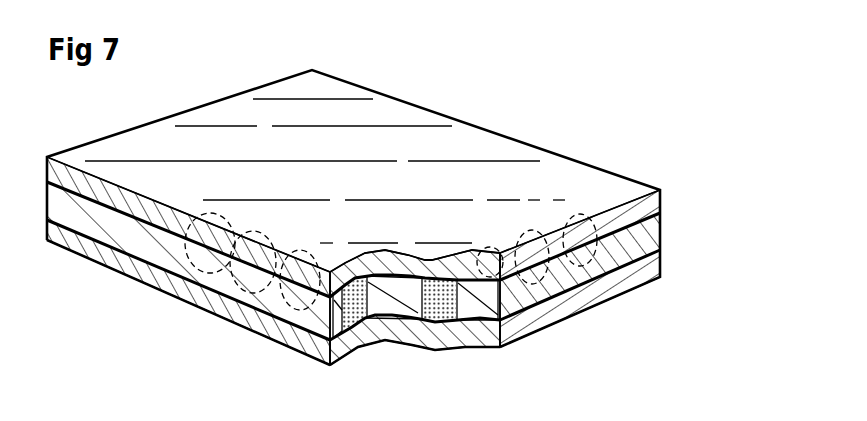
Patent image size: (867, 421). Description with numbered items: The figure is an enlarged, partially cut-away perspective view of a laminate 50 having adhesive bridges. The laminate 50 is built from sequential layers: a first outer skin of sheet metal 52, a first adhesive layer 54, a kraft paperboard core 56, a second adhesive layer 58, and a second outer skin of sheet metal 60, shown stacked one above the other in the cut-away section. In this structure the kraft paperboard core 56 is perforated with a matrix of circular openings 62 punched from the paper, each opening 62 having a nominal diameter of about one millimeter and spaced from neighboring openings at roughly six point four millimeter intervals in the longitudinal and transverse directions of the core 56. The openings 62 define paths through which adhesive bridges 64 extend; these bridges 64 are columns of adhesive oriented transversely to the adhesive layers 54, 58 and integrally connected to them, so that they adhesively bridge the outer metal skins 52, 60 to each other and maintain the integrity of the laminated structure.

The laminate 50 is at (436, 98).
The first outer skin of sheet metal 52 is at (650, 200).
The first adhesive layer 54 is at (653, 215).
The kraft paperboard core 56 is at (650, 235).
The second adhesive layer 58 is at (658, 253).
The second outer skin of sheet metal 60 is at (635, 273).
The circular openings 62 is at (232, 226).
The adhesive bridges 64 is at (447, 325).